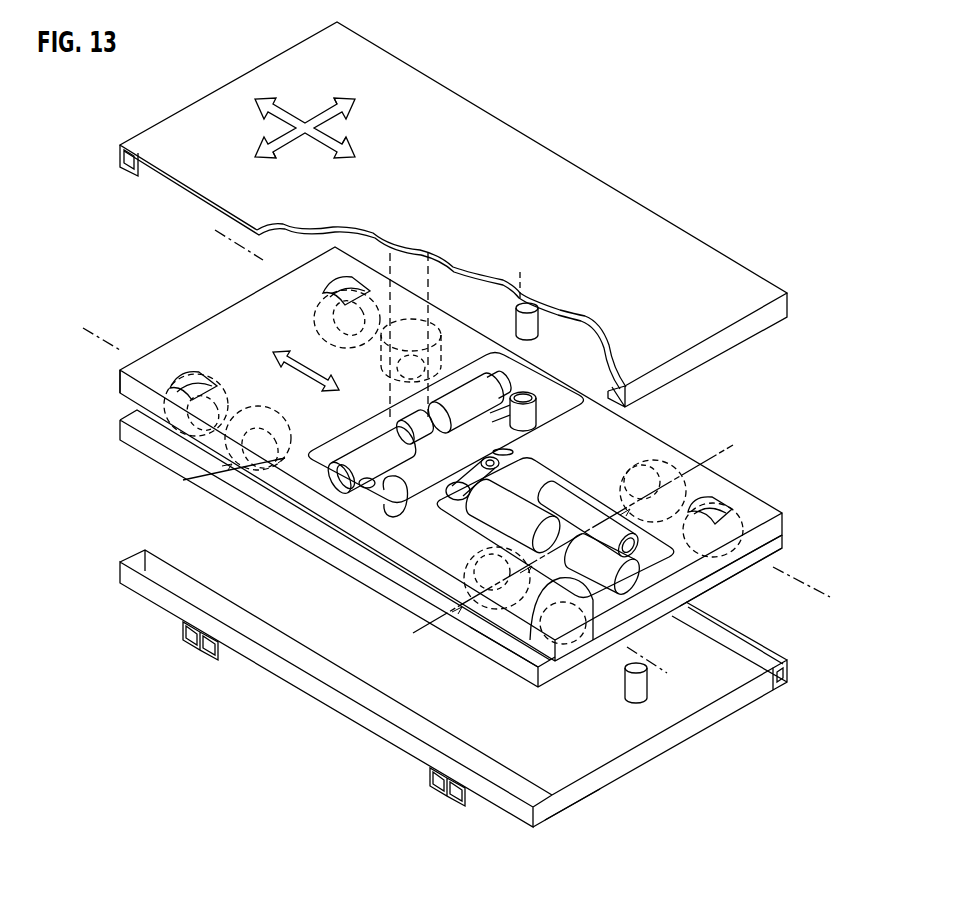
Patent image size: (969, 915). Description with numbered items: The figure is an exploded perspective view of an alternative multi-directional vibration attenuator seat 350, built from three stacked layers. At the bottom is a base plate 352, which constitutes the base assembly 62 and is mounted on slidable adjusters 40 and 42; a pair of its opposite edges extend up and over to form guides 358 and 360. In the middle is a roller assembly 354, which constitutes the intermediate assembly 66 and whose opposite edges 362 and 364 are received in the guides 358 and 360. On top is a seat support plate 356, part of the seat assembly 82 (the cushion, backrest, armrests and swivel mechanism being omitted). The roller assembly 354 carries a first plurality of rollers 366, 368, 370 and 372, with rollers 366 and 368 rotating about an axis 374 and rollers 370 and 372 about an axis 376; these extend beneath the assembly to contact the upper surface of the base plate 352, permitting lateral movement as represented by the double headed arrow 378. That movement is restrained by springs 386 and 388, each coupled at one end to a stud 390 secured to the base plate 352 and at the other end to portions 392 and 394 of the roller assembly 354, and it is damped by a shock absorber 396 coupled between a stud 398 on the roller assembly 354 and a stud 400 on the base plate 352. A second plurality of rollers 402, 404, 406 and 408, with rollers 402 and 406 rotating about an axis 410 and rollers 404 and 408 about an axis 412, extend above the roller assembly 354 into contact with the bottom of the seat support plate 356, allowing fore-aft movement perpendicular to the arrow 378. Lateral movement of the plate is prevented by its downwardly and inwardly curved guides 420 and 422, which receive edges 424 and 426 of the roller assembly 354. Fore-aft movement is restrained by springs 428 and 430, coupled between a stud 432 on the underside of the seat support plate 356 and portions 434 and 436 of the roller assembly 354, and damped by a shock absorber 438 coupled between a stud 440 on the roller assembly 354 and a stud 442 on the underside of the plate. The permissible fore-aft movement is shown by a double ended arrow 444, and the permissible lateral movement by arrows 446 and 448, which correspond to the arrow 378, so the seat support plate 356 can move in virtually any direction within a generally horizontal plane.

The slidable adjuster 40 is at (466, 802).
The slidable adjuster 42 is at (226, 655).
The base assembly 62 is at (566, 820).
The intermediate assembly 66 is at (446, 476).
The seat assembly 82 is at (434, 214).
The multi-directional vibration attenuator seat 350 is at (456, 709).
The base plate 352 is at (521, 812).
The roller assembly 354 is at (740, 565).
The seat support plate 356 is at (688, 246).
The guide 358 is at (400, 760).
The guide 360 is at (745, 642).
The edge of roller assembly 362 is at (512, 658).
The edge of roller assembly 364 is at (758, 508).
The roller 366 is at (487, 553).
The roller 368 is at (667, 450).
The roller 370 is at (275, 415).
The roller 372 is at (437, 310).
The axis 374 is at (422, 628).
The axis 376 is at (185, 482).
The double headed arrow 378 is at (303, 368).
The spring 386 is at (597, 552).
The spring 388 is at (526, 502).
The stud 390 is at (558, 519).
The portion of roller assembly 392 is at (642, 574).
The portion of roller assembly 394 is at (458, 466).
The shock absorber 396 is at (553, 502).
The stud 398 is at (513, 452).
The stud 400 is at (645, 690).
The roller 402 is at (510, 645).
The roller 404 is at (712, 503).
The roller 406 is at (190, 372).
The roller 408 is at (316, 299).
The axis 410 is at (103, 336).
The axis 412 is at (235, 240).
The guide 420 is at (735, 333).
The guide 422 is at (126, 178).
The edge of roller assembly 424 is at (703, 582).
The edge of roller assembly 426 is at (118, 372).
The spring 428 is at (353, 443).
The spring 430 is at (461, 395).
The stud 432 is at (402, 413).
The portion of roller assembly 434 is at (322, 459).
The portion of roller assembly 436 is at (503, 383).
The shock absorber 438 is at (418, 477).
The stud 440 is at (416, 506).
The stud 442 is at (538, 325).
The double ended arrow 444 is at (345, 118).
The arrow 446 is at (349, 165).
The arrow 448 is at (258, 114).